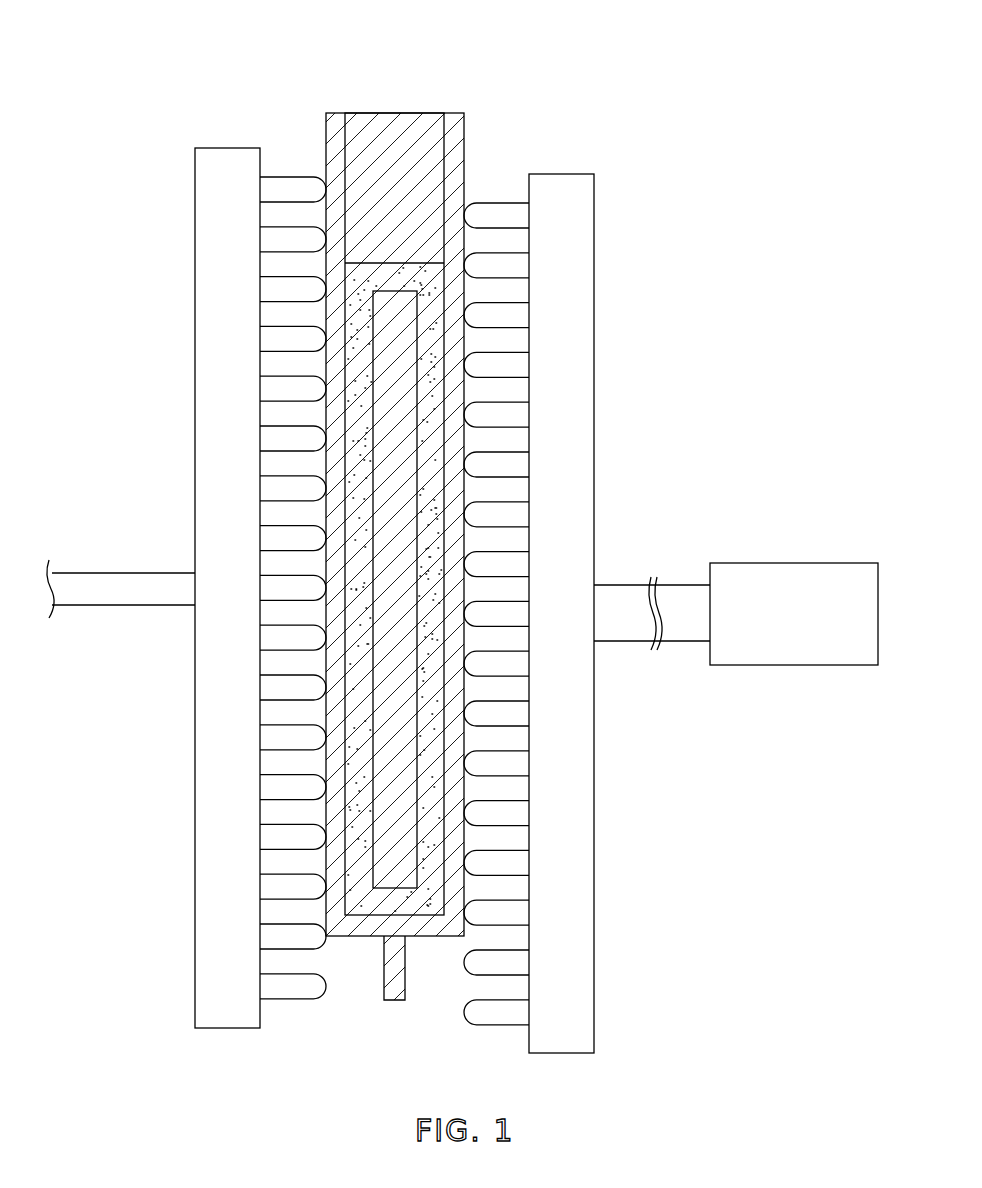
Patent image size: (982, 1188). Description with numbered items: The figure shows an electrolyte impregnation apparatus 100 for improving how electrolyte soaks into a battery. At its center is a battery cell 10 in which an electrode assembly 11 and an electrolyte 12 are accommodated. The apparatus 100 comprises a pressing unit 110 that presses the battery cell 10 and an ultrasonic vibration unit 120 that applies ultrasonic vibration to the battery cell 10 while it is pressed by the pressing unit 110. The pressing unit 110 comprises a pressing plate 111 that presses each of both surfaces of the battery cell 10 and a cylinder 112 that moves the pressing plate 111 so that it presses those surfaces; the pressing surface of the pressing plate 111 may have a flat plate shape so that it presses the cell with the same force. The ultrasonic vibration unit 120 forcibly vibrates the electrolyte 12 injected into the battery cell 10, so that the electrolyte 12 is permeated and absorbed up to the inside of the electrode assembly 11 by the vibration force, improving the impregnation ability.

The electrolyte impregnation apparatus 100 is at (491, 536).
The pressing unit 110 is at (462, 600).
The pressing plate 111 is at (583, 358).
The cylinder 112 is at (750, 570).
The ultrasonic vibration unit 120 is at (491, 509).
The battery cell 10 is at (241, 587).
The electrode assembly 11 is at (377, 640).
The electrolyte 12 is at (357, 585).